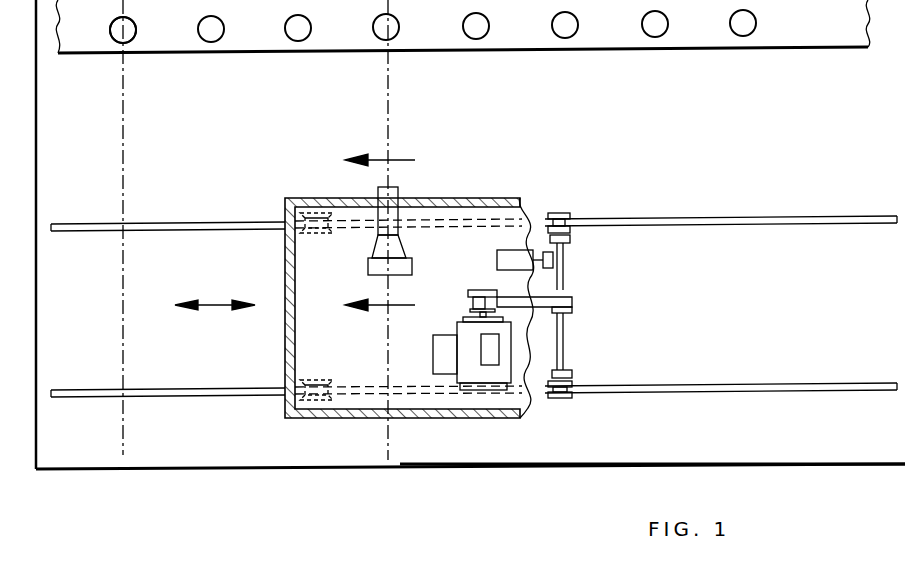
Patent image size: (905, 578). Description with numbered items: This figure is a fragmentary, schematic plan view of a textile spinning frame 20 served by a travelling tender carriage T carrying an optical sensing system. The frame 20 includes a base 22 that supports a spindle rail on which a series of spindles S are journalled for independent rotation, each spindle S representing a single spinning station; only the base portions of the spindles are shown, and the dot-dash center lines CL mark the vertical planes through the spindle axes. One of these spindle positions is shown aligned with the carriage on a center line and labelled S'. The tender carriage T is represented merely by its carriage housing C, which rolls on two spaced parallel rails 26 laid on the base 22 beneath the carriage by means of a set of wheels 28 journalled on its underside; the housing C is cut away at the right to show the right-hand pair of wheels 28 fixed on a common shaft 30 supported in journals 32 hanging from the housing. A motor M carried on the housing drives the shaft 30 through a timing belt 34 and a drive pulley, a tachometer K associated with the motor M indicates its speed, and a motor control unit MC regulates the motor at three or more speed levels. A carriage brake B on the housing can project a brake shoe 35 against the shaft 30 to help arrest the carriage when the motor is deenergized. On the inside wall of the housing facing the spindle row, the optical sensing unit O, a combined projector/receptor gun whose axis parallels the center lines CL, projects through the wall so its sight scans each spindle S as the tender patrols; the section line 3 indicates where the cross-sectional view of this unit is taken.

The textile spinning frame 20 is at (232, 472).
The base 22 is at (546, 443).
The rails 26 is at (742, 226).
The wheels 28 is at (313, 215).
The shaft 30 is at (562, 333).
The journals 32 is at (570, 239).
The timing belt 34 is at (530, 300).
The brake shoe 35 is at (555, 260).
The spindles S is at (462, 64).
The sprocket hole on centerline S' is at (145, 64).
The tender carriage T is at (409, 282).
The carriage housing C is at (297, 305).
The optical sensing unit O is at (370, 250).
The carriage brake B is at (497, 260).
The tachometer K is at (445, 354).
The motor M is at (482, 383).
The motor control unit MC is at (490, 345).
The section line 3- 3 is at (379, 236).
The center line CL is at (124, 195).